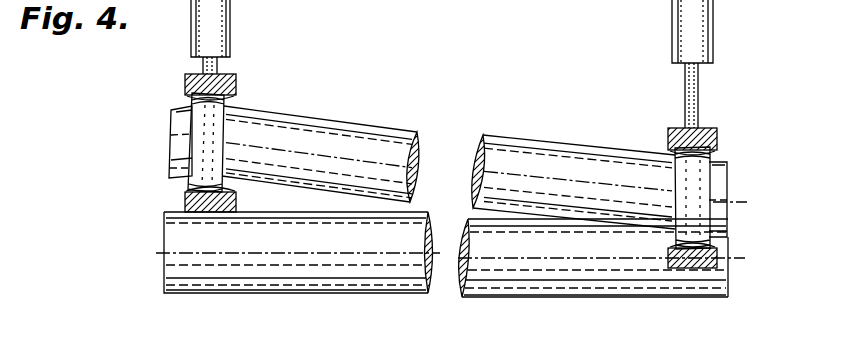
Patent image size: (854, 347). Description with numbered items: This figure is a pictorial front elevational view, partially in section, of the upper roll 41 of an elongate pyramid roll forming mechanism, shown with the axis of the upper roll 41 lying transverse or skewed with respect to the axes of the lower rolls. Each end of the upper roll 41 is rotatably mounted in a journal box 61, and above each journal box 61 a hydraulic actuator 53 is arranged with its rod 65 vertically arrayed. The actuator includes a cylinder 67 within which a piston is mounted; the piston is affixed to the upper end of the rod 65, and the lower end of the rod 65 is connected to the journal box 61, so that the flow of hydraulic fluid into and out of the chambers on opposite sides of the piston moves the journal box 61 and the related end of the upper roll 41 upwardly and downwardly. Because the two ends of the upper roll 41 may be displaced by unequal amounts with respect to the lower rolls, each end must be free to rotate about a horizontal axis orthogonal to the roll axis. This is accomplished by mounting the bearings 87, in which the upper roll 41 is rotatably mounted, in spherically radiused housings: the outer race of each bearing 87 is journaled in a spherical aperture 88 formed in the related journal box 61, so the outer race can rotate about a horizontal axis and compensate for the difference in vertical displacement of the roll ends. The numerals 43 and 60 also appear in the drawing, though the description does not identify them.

The upper roll 41 is at (723, 190).
The lower cylinder 43 is at (528, 288).
The hydraulic actuator 53 is at (222, 17).
The shaft 60 is at (378, 339).
The journal box 61 is at (185, 78).
The rod 65 is at (217, 62).
The cylinder 67 is at (298, 279).
The bearing 87 is at (233, 102).
The spherical aperture 88 is at (185, 97).